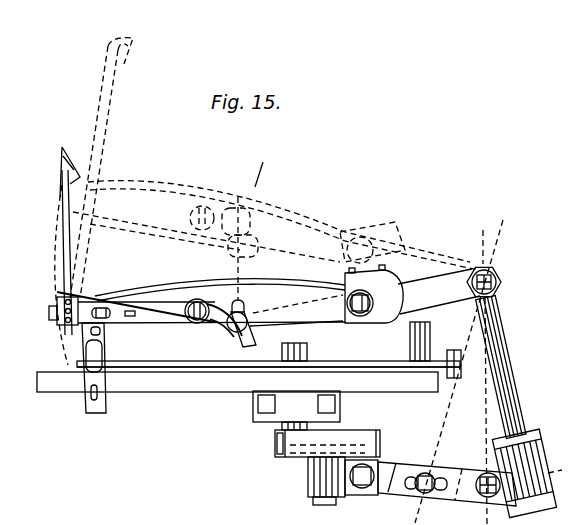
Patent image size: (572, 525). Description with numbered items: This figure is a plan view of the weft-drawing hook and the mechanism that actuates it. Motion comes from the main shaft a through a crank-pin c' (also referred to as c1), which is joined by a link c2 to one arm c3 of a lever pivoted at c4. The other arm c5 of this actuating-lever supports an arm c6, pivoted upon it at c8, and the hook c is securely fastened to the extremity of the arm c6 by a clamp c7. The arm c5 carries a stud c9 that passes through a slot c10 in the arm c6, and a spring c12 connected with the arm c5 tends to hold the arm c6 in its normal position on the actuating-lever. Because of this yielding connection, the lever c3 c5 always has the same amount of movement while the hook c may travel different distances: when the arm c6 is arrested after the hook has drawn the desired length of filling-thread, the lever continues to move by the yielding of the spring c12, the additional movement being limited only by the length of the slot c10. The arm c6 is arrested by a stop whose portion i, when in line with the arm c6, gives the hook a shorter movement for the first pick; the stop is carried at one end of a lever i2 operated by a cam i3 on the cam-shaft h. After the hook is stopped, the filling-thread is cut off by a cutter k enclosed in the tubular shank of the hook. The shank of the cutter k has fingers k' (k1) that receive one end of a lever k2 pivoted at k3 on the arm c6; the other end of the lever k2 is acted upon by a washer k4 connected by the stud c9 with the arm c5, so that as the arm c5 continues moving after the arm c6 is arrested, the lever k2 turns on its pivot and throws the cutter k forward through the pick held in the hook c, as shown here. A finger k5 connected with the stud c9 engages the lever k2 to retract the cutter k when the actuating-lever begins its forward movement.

The cutter k is at (60, 241).
The weft-drawing hook c is at (94, 201).
The clamp c7 is at (52, 312).
The fingers k' is at (136, 296).
The connecting rod k1 is at (136, 296).
The lever k2 is at (158, 318).
The pivot k3 is at (193, 322).
The washer k4 is at (248, 321).
The finger k5 is at (232, 338).
The stop portion i is at (107, 333).
The slot c10 is at (245, 306).
The spring c12 is at (205, 290).
The stud c9 is at (250, 297).
The arm c6 is at (290, 312).
The arm of actuating-lever c5 is at (318, 327).
The pivot c8 is at (374, 294).
The lever pivot c4 is at (494, 273).
The arm of lever c3 is at (512, 404).
The cam-shaft h is at (428, 333).
The cam i3 is at (452, 338).
The lever i2 is at (268, 351).
The main shaft a is at (248, 364).
The crank-pin c' is at (316, 458).
The lower carriage c1 is at (316, 458).
The link c2 is at (425, 472).